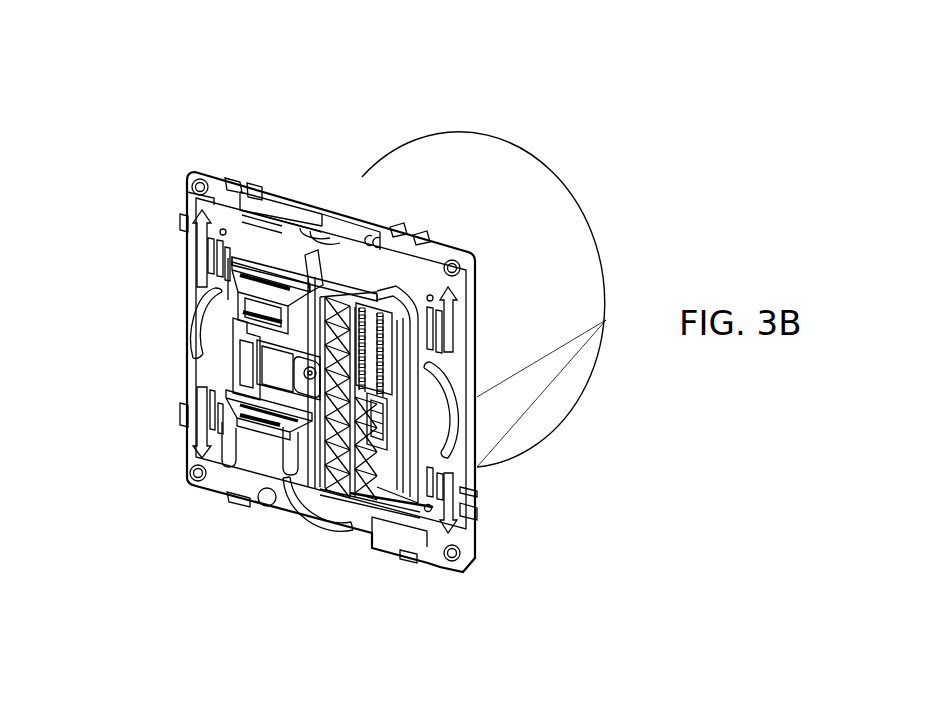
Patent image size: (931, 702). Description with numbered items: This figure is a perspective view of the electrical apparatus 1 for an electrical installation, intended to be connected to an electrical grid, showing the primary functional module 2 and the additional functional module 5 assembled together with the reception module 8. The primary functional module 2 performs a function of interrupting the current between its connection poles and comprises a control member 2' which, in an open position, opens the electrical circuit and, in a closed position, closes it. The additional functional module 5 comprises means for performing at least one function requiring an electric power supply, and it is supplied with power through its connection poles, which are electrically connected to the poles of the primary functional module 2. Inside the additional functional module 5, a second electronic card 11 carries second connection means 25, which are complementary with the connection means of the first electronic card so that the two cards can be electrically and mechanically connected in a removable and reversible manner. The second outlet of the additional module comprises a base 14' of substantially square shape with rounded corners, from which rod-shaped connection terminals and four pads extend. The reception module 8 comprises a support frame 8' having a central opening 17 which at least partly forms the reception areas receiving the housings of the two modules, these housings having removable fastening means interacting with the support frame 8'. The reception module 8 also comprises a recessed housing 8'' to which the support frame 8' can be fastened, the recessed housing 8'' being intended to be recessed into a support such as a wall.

The electrical apparatus 1 is at (157, 158).
The reception module 8 is at (424, 134).
The support frame 8' is at (295, 125).
The recessed housing 8'' is at (512, 259).
The primary functional module 2 is at (309, 264).
The control member 2' is at (206, 386).
The additional functional module 5 is at (375, 284).
The central opening 17 is at (462, 338).
The second connection means 25 is at (370, 345).
The second electronic card 11 is at (383, 458).
The base 14' is at (181, 376).